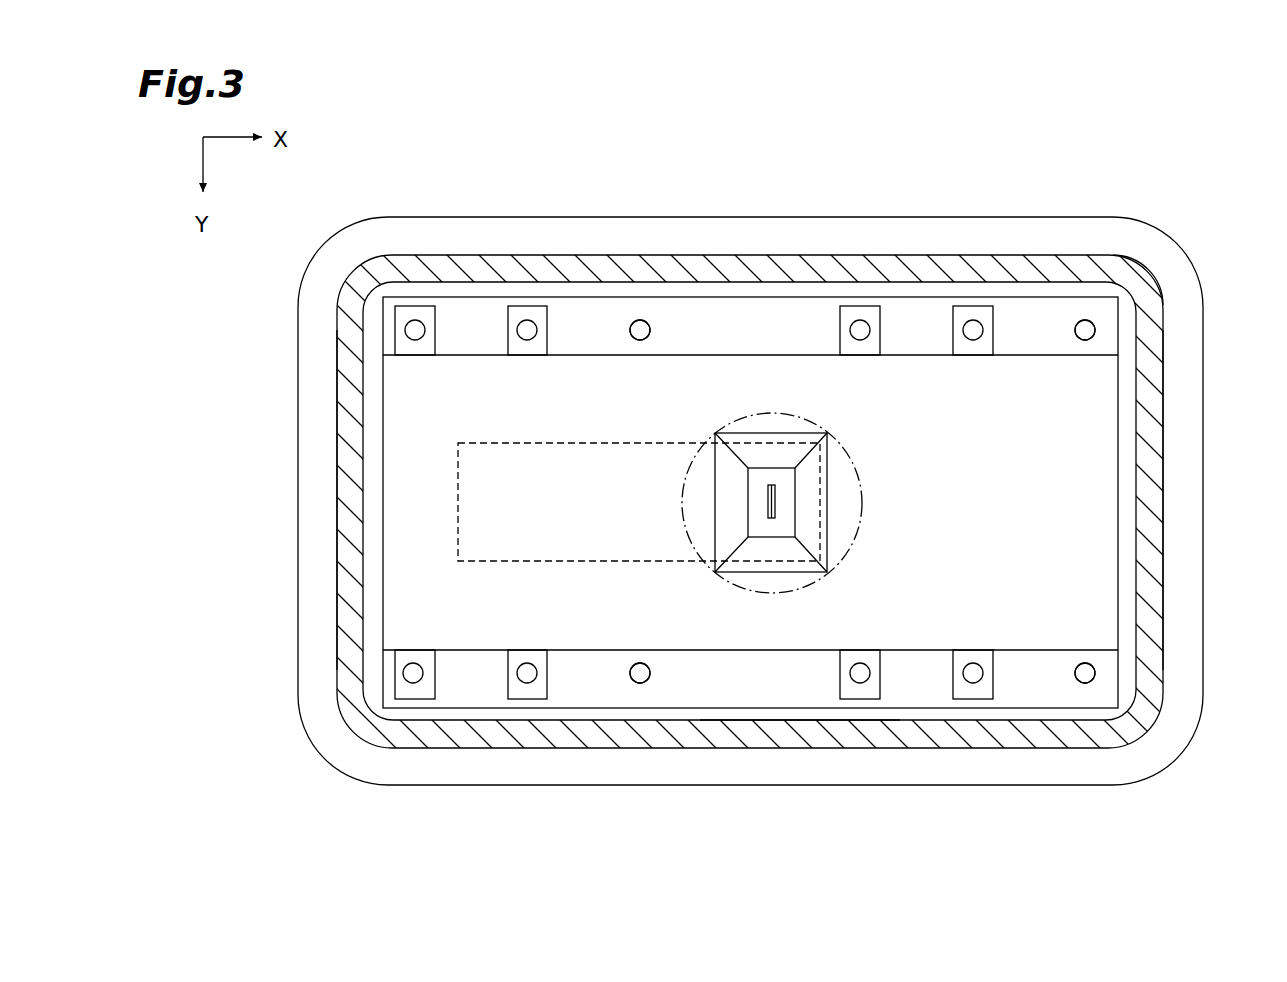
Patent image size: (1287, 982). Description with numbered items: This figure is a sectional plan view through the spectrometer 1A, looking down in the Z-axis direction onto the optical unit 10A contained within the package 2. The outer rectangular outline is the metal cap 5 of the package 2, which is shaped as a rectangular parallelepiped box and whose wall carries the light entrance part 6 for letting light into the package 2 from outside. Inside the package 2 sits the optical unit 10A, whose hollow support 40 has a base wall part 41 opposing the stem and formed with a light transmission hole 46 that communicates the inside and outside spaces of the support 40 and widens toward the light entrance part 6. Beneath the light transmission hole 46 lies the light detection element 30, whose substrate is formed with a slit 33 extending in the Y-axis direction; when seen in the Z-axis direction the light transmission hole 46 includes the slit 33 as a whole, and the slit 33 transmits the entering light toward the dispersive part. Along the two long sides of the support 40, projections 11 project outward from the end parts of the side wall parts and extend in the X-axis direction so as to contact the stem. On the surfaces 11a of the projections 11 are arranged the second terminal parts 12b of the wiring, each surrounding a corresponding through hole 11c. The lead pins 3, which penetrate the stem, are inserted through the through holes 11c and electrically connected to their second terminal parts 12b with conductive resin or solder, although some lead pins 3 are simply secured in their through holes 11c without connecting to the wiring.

The spectrometer 1A is at (1178, 156).
The package 2 is at (760, 250).
The lead pins 3 is at (415, 328).
The cap 5 is at (770, 732).
The light entrance part 6 is at (862, 510).
The optical unit 10A is at (1020, 286).
The projections 11 is at (800, 293).
The surfaces of the projections 11a is at (703, 318).
The through holes 11c is at (645, 341).
The second terminal parts 12b is at (425, 352).
The light detection element 30 is at (630, 562).
The slit 33 is at (772, 520).
The support 40 is at (378, 487).
The base wall part 41 is at (1087, 477).
The light transmission hole 46 is at (780, 447).